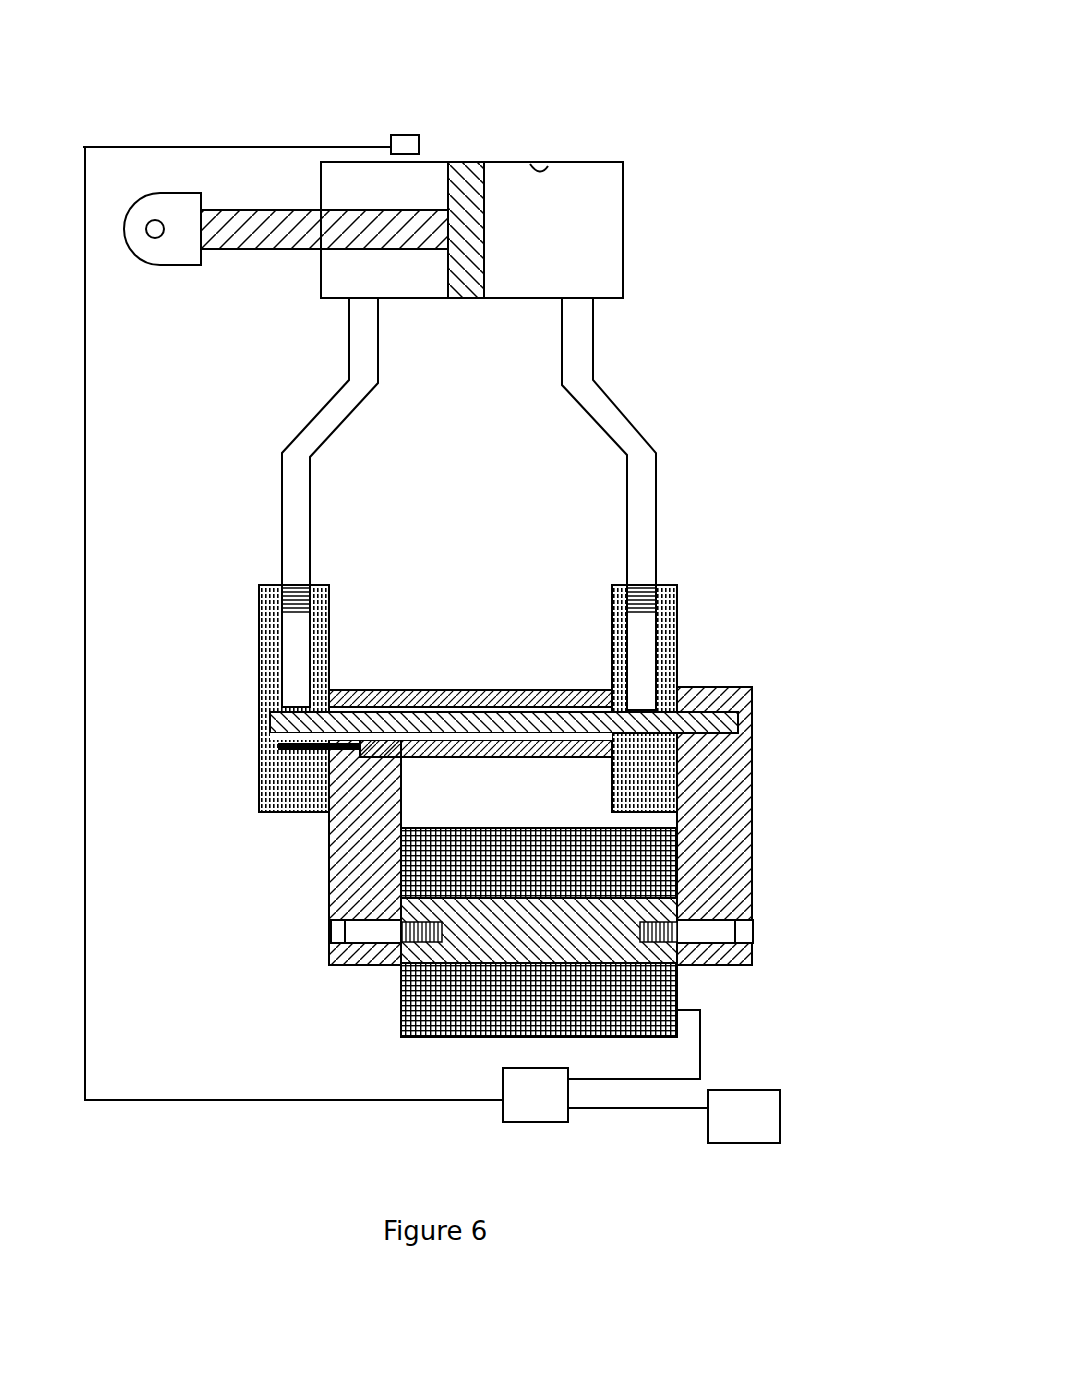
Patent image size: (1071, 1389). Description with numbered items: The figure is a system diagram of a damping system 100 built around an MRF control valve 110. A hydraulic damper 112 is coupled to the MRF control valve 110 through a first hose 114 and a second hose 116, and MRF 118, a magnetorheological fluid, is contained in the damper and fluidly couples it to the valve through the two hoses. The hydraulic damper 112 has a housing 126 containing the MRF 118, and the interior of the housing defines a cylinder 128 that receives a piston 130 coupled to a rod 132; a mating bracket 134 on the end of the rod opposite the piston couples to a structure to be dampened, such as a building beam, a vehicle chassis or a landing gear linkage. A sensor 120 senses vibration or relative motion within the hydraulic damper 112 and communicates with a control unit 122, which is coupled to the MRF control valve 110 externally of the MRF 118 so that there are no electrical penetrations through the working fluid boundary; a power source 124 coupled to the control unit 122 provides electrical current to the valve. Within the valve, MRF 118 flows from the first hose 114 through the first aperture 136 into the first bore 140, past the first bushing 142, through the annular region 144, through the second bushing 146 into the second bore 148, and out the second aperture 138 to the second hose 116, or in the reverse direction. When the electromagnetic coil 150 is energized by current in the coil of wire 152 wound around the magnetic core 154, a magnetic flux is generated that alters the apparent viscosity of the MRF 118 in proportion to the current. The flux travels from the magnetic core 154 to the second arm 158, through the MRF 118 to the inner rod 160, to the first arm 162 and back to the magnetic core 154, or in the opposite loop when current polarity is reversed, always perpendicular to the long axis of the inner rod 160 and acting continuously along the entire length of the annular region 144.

The damping system 100 is at (525, 80).
The MRF control valve 110 is at (800, 707).
The hydraulic damper 112 is at (623, 187).
The first hose 114 is at (308, 502).
The second hose 116 is at (617, 407).
The MRF 118 is at (552, 250).
The sensor 120 is at (419, 135).
The control unit 122 is at (503, 1082).
The power source 124 is at (740, 1090).
The housing 126 is at (623, 218).
The cylinder 128 is at (548, 168).
The piston 130 is at (467, 268).
The rod 132 is at (270, 212).
The mating bracket 134 is at (168, 250).
The first aperture 136 is at (280, 587).
The second aperture 138 is at (655, 583).
The first bore 140 is at (297, 655).
The first bushing 142 is at (355, 693).
The annular region 144 is at (442, 710).
The second bushing 146 is at (593, 692).
The second bore 148 is at (640, 650).
The electromagnetic coil 150 is at (400, 990).
The coil of wire 152 is at (682, 990).
The magnetic core 154 is at (683, 898).
The second arm 158 is at (345, 848).
The inner rod 160 is at (273, 717).
The first arm 162 is at (727, 763).